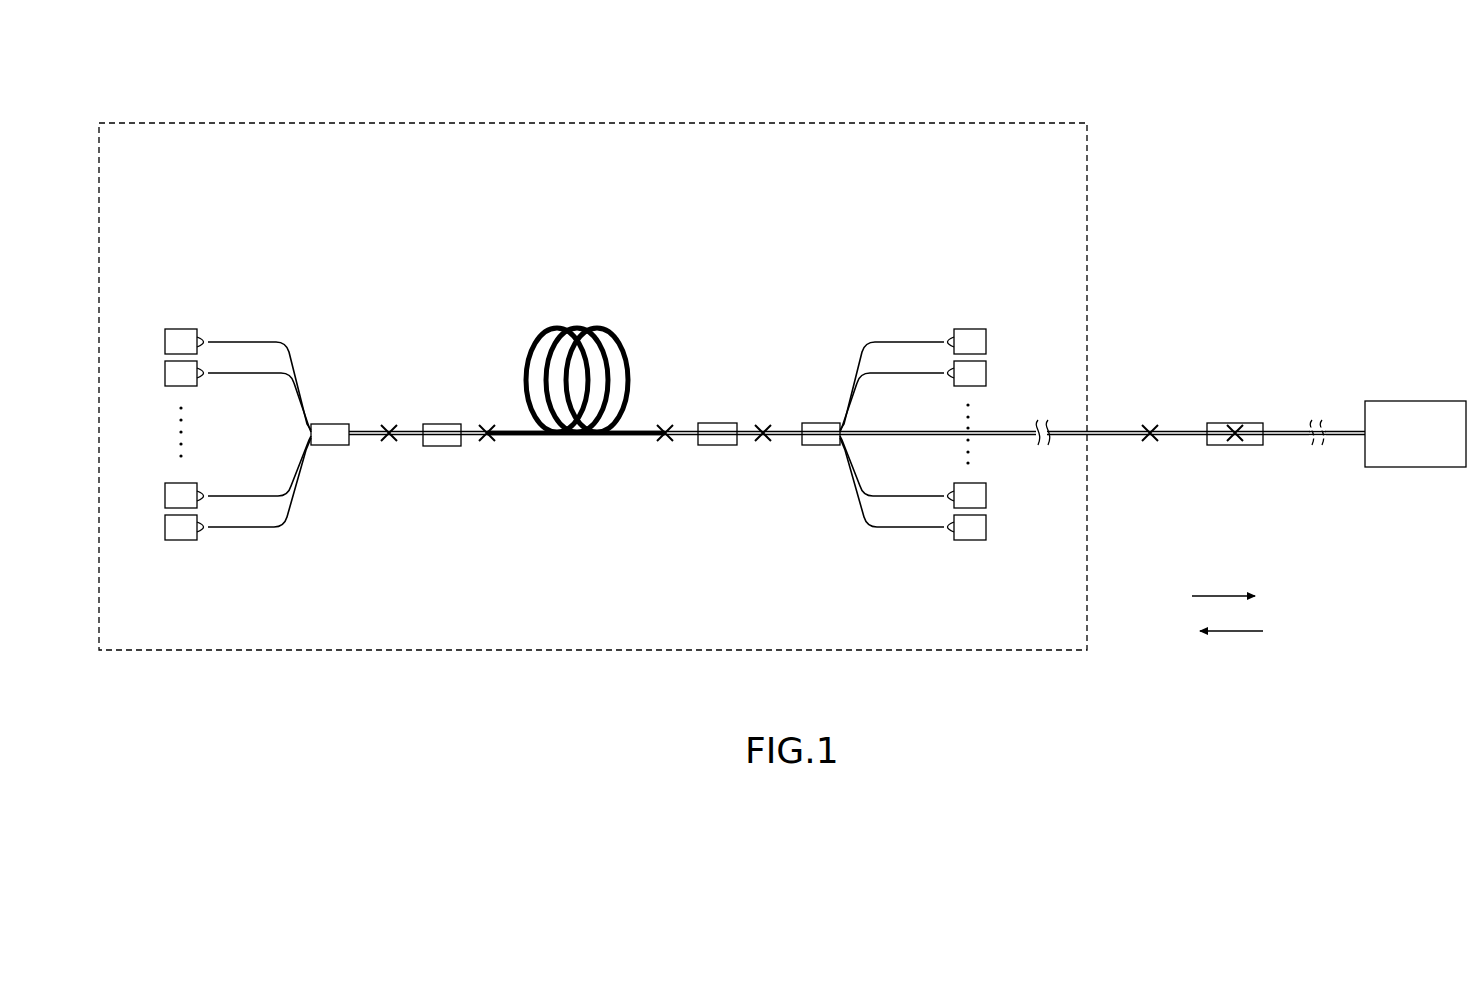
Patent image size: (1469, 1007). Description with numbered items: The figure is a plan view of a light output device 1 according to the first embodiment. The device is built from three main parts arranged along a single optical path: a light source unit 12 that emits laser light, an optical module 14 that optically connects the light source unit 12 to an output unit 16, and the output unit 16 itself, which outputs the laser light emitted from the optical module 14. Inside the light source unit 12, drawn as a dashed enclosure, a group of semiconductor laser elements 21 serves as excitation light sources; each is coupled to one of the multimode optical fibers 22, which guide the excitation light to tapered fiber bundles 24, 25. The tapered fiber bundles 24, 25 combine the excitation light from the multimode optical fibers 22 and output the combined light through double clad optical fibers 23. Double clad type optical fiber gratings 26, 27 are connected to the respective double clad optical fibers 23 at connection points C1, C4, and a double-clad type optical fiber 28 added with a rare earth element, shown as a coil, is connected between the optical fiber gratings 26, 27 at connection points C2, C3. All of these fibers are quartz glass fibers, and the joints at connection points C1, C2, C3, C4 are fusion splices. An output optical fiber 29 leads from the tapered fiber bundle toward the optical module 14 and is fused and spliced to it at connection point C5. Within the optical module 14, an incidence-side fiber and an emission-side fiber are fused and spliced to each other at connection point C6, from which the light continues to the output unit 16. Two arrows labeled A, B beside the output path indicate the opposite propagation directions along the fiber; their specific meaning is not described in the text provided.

The light output device 1 is at (1243, 120).
The light source unit 12 is at (820, 123).
The optical module 14 is at (1244, 419).
The output unit 16 is at (1413, 391).
The semiconductor laser elements 21 is at (1008, 531).
The multimode optical fibers 22 is at (903, 538).
The double clad optical fibers 23 is at (388, 425).
The tapered fiber bundle 24 is at (325, 424).
The tapered fiber bundle 25 is at (828, 423).
The double clad type optical fiber grating 26 is at (441, 421).
The double clad type optical fiber grating 27 is at (716, 420).
The double-clad type optical fiber added with a rare earth element 28 is at (623, 348).
The output optical fiber 29 is at (1003, 428).
The connection point C1 is at (391, 440).
The connection point C2 is at (489, 441).
The connection point C3 is at (667, 441).
The connection point C4 is at (763, 441).
The connection point C5 is at (1150, 441).
The connection point C6 is at (1235, 441).
The forward propagation direction A is at (1222, 596).
The backward propagation direction B is at (1226, 632).